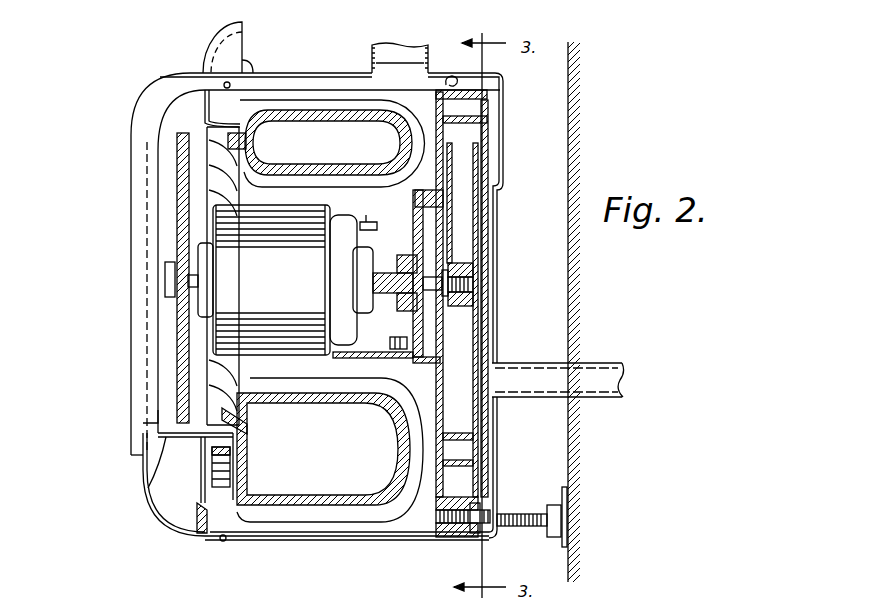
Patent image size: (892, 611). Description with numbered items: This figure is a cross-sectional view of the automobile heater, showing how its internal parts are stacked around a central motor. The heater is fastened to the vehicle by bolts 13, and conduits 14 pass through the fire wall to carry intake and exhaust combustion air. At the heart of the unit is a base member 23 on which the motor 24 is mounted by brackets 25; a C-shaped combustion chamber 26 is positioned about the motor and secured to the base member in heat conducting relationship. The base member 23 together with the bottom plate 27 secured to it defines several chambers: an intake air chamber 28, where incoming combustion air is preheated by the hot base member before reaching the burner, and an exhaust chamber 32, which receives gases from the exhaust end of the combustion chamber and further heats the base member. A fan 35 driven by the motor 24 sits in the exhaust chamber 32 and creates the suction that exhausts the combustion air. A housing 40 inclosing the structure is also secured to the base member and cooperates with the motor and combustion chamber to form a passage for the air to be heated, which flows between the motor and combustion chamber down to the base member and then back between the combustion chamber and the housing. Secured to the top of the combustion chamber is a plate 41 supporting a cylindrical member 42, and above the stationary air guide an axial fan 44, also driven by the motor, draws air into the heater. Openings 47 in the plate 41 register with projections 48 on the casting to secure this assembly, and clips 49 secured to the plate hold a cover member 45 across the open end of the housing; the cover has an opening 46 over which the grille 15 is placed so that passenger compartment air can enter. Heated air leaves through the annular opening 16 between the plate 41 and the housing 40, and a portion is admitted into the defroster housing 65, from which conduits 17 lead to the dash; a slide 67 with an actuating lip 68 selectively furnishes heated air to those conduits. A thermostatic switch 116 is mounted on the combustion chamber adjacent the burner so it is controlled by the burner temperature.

The bolts 13 is at (530, 527).
The conduits 14 is at (606, 398).
The grille 15 is at (134, 223).
The annular opening 16 is at (217, 90).
The conduits 17 is at (420, 52).
The base member 23 is at (450, 537).
The motor 24 is at (282, 280).
The brackets 25 is at (362, 352).
The combustion chamber 26 is at (307, 110).
The bottom plate 27 is at (482, 168).
The intake air chamber 28 is at (467, 478).
The exhaust chamber 32 is at (470, 130).
The fan 35 is at (462, 320).
The housing 40 is at (345, 540).
The plate 41 is at (198, 505).
The cylindrical member 42 is at (167, 436).
The axial fan 44 is at (177, 335).
The cover member 45 is at (147, 503).
The opening 46 is at (157, 415).
The openings 47 is at (260, 448).
The projections 48 is at (255, 420).
The clips 49 is at (203, 455).
The defroster housing 65 is at (344, 73).
The slide 67 is at (452, 80).
The actuating lip 68 is at (235, 37).
The thermostatic switch 116 is at (250, 482).